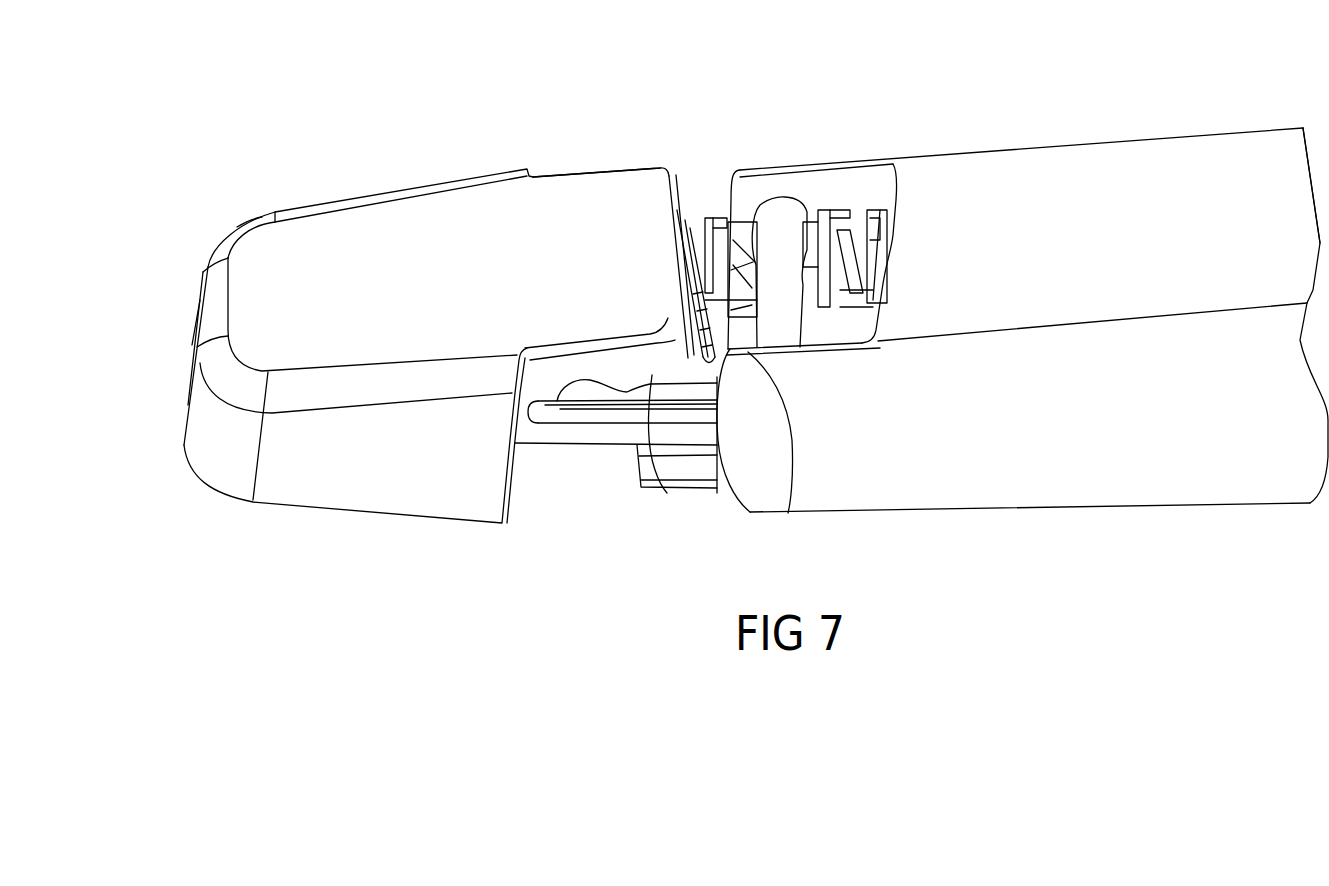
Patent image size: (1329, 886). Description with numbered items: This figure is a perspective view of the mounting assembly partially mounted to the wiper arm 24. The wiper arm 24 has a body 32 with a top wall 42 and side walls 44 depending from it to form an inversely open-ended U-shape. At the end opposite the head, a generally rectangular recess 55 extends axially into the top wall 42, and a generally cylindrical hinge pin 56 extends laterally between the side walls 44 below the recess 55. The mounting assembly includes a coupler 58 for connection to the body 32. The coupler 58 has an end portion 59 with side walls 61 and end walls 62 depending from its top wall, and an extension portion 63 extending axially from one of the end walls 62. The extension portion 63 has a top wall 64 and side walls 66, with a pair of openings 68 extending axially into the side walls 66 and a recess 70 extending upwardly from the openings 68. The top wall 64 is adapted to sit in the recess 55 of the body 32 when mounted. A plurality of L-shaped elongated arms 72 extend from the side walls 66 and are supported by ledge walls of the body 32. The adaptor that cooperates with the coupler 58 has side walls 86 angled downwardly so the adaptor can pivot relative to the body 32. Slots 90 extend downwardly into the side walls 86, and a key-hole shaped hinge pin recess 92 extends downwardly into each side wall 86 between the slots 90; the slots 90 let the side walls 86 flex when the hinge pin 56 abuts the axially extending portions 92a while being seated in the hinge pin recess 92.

The wiper arm 24 is at (1034, 289).
The body 32 is at (1048, 148).
The top wall 42 is at (1223, 167).
The side walls 44 is at (1165, 467).
The recess 55 is at (868, 323).
The hinge pin 56 is at (783, 213).
The coupler 58 is at (328, 198).
The end portion 59 is at (237, 227).
The side walls 61 is at (385, 480).
The end walls 62 is at (190, 333).
The extension portion 63 is at (625, 165).
The top wall 64 is at (590, 190).
The side walls 66 is at (667, 493).
The openings 68 is at (538, 424).
The recess 70 is at (587, 395).
The elongated arms 72 is at (610, 449).
The side walls 86 is at (880, 210).
The slots 90 is at (743, 500).
The hinge pin recess 92 is at (790, 513).
The axially extending portions 92a is at (750, 180).